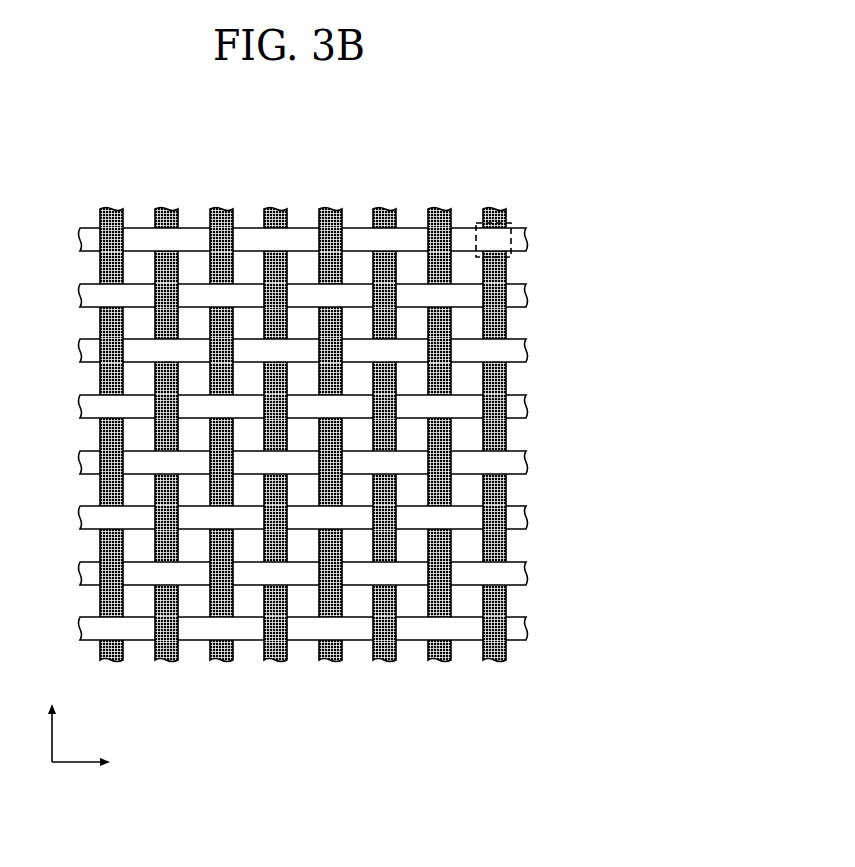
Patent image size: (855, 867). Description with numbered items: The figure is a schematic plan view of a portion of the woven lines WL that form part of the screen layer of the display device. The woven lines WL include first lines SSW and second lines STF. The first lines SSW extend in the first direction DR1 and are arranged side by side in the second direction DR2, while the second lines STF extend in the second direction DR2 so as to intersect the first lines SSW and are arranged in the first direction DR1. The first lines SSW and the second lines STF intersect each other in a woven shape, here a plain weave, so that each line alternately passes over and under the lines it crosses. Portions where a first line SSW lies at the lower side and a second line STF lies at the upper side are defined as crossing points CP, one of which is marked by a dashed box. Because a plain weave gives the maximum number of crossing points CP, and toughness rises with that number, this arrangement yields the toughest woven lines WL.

The woven lines WL is at (342, 381).
The first lines SSW is at (274, 213).
The second lines STF is at (514, 296).
The crossing points CP is at (512, 232).
The first direction DR1 is at (51, 722).
The second direction DR2 is at (100, 764).